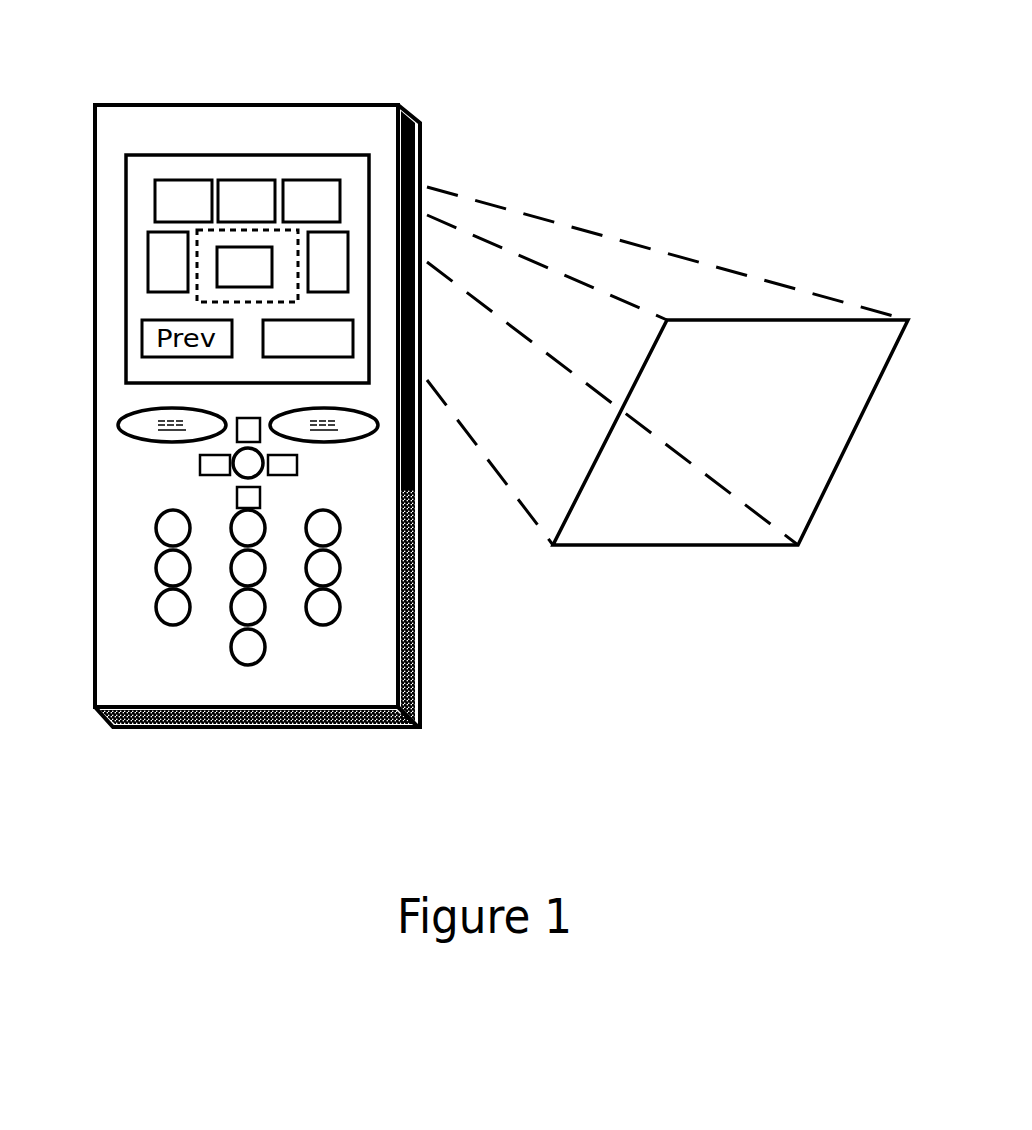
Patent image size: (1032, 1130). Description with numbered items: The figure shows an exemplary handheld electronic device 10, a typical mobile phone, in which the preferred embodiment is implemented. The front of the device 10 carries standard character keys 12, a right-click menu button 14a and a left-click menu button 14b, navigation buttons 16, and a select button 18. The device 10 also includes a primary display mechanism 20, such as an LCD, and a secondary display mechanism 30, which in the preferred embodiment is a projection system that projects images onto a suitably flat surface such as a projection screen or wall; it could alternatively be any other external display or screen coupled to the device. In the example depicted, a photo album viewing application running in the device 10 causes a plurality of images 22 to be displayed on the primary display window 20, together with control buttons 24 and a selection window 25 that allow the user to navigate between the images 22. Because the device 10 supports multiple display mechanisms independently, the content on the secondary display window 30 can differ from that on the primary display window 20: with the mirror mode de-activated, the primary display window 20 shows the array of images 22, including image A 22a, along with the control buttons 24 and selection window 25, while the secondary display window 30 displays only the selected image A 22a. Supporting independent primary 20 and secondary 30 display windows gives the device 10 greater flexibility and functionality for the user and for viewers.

The handheld electronic device 10 is at (684, 745).
The character keys 12 is at (158, 605).
The right-click menu button 14a is at (355, 443).
The left-click menu button 14b is at (138, 438).
The navigation buttons 16 is at (303, 462).
The select button 18 is at (233, 479).
The primary display mechanism 20 is at (310, 152).
The images 22 is at (180, 178).
The image A 22a is at (243, 245).
The control buttons 24 is at (357, 337).
The selection window 25 is at (196, 302).
The secondary display mechanism 30 is at (723, 317).